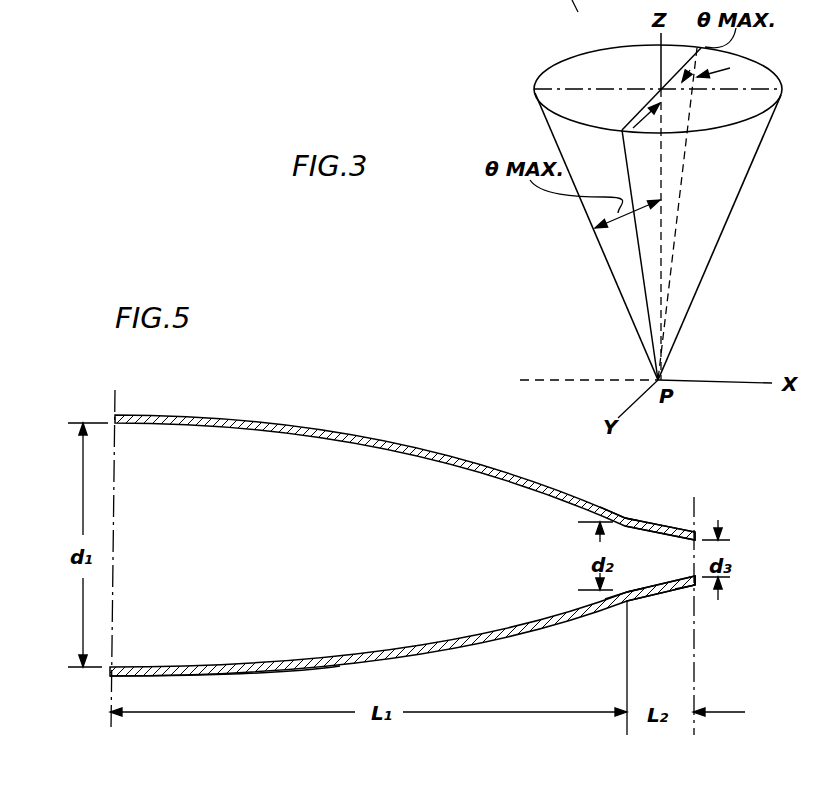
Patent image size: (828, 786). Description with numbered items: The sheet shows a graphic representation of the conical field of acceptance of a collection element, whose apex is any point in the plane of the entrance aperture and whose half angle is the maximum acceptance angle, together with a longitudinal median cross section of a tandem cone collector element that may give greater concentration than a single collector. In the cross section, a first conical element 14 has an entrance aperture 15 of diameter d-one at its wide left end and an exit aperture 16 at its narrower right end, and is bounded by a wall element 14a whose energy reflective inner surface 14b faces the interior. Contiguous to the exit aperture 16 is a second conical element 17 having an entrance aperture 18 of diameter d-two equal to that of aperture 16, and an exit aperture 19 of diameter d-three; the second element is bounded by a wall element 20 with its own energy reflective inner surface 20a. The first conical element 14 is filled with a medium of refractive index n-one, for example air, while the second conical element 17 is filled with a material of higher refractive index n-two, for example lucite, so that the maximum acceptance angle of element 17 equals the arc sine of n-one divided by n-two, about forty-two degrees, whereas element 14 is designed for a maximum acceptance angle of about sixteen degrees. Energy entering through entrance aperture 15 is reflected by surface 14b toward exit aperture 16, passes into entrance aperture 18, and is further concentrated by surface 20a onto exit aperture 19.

The first conical element 14 is at (212, 402).
The wall element 14a is at (440, 653).
The energy reflective inner surface 14b is at (207, 660).
The entrance aperture 15 is at (115, 498).
The exit aperture 16 is at (625, 535).
The second conical element 17 is at (668, 496).
The entrance aperture 18 is at (632, 583).
The exit aperture 19 is at (700, 540).
The wall element 20 is at (685, 583).
The energy reflective inner surface 20a is at (658, 580).